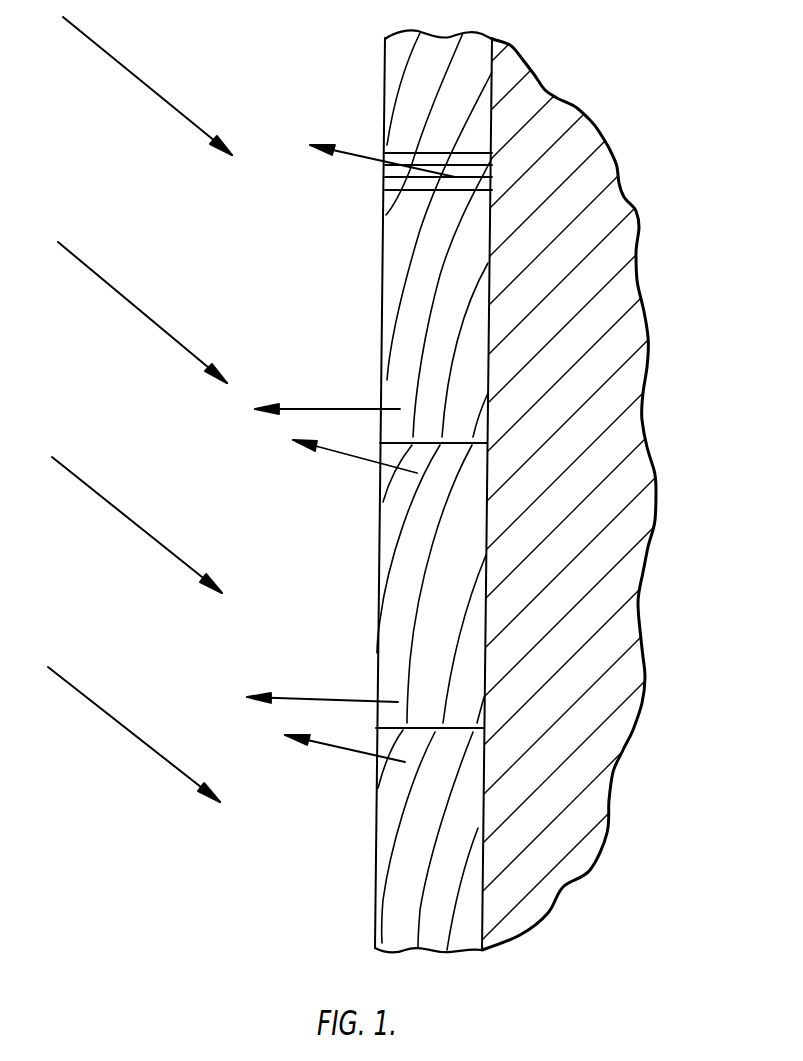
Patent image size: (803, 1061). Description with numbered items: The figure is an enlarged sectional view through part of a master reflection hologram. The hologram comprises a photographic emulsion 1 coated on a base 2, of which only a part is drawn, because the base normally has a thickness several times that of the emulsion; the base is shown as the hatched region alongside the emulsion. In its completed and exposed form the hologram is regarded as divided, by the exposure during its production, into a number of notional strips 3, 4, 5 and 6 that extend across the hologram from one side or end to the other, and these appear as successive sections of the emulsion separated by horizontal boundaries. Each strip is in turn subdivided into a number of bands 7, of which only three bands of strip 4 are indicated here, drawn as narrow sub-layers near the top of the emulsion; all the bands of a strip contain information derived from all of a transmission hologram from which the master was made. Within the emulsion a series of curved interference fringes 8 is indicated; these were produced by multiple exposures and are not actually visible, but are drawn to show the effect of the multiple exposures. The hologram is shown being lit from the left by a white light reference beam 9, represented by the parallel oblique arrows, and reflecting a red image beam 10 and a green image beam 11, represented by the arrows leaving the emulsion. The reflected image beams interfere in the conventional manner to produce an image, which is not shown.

The photographic emulsion 1 is at (493, 87).
The base 2 is at (613, 293).
The notional strip 3 is at (427, 81).
The notional strip 4 is at (413, 304).
The notional strip 5 is at (413, 536).
The notional strip 6 is at (423, 817).
The band 7 is at (392, 183).
The curved interference fringes 8 is at (415, 623).
The white light reference beam 9 is at (197, 125).
The red image beam 10 is at (347, 152).
The green image beam 11 is at (297, 406).